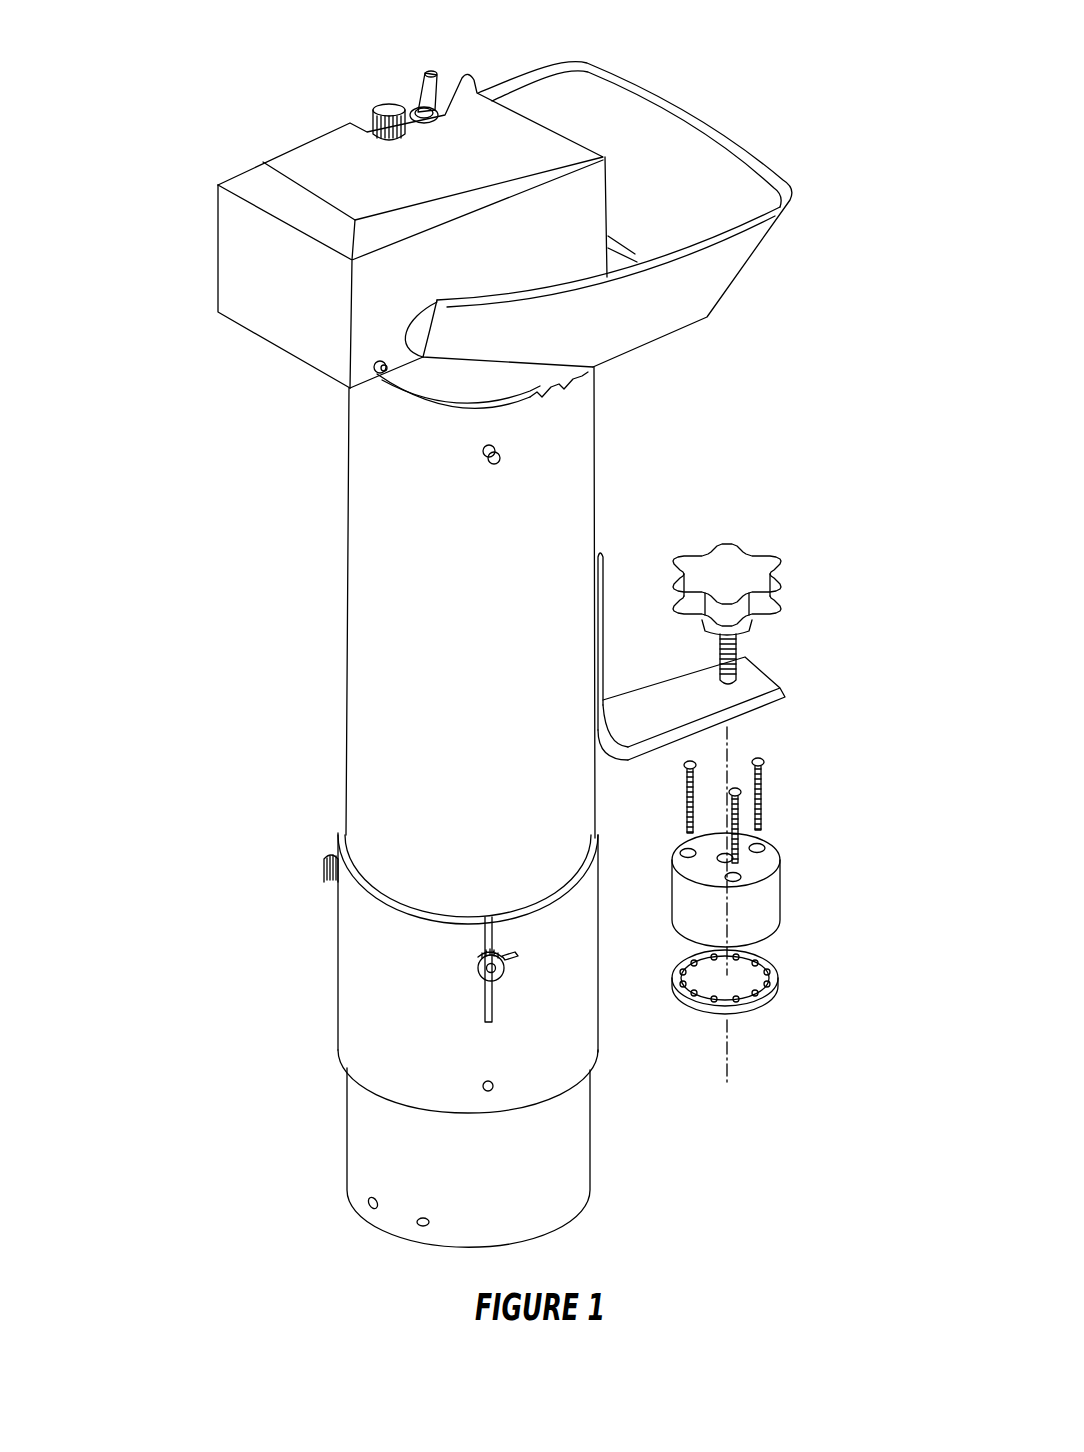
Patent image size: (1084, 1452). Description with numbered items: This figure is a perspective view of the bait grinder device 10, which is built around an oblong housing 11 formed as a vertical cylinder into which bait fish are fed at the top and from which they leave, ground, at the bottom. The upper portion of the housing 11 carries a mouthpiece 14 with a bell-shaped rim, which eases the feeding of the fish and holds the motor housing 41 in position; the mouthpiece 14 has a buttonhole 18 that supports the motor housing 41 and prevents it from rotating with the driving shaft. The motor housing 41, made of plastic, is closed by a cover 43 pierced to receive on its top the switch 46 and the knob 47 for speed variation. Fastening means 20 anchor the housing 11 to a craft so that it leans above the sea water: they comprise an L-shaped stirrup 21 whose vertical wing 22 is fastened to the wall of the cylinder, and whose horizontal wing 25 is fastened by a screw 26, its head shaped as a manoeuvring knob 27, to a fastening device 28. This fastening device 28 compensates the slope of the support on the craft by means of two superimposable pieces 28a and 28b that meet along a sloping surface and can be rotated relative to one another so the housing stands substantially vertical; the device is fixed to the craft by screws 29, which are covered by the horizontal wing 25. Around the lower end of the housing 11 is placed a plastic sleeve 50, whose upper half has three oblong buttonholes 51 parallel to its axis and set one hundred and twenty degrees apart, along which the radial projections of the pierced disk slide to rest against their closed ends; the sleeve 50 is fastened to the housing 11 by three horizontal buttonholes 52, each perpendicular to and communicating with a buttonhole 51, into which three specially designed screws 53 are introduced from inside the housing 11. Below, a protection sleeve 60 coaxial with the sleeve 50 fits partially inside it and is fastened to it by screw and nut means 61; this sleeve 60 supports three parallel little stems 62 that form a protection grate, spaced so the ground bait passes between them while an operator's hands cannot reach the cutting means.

The device 10 is at (223, 672).
The housing 11 is at (361, 517).
The mouthpiece 14 is at (695, 115).
The buttonhole 18 is at (588, 371).
The fastening means 20 is at (830, 683).
The L-shaped stirrup 21 is at (628, 768).
The vertical wing 22 is at (600, 570).
The horizontal wing 25 is at (773, 688).
The screw 26 is at (742, 640).
The manoeuvring knob 27 is at (732, 560).
The fastening device 28 is at (798, 935).
The superimposable piece 28a is at (763, 862).
The superimposable piece 28b is at (750, 980).
The screws 29 is at (740, 822).
The housing 41 is at (208, 240).
The cover 43 is at (282, 320).
The switch 46 is at (437, 92).
The knob 47 is at (390, 107).
The sleeve 50 is at (340, 962).
The buttonholes 51 is at (483, 1007).
The horizontal buttonholes 52 is at (503, 955).
The screws 53 is at (325, 838).
The sleeve 60 is at (595, 1170).
The screw and nut means 61 is at (497, 1085).
The stems 62 is at (422, 1224).